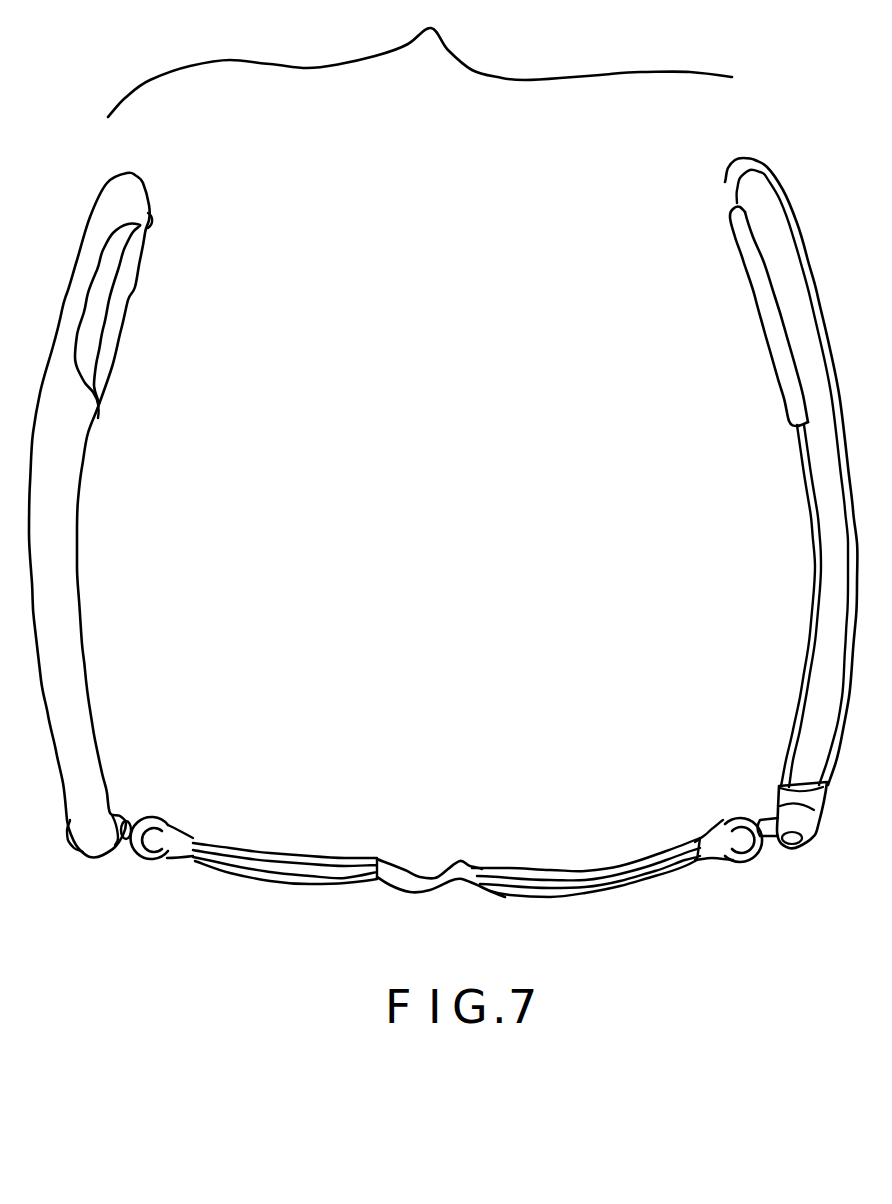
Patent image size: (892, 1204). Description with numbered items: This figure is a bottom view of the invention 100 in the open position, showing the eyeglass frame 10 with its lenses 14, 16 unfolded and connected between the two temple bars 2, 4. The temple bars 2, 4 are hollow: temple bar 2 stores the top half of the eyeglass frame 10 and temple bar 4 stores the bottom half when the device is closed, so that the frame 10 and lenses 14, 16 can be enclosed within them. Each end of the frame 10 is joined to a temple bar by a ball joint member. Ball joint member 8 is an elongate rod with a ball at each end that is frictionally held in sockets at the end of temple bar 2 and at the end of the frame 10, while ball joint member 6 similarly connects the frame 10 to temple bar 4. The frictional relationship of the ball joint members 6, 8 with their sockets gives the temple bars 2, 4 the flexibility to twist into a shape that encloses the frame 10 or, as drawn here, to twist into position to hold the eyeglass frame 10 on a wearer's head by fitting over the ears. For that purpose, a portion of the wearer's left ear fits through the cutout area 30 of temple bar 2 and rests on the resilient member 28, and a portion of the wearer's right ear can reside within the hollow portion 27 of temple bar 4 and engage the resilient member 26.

The invention 100 is at (431, 28).
The temple bar 2 is at (63, 562).
The temple bar 4 is at (812, 547).
The ball joint member 6 is at (762, 813).
The ball joint member 8 is at (125, 820).
The eyeglass frame 10 is at (417, 877).
The lens 14 is at (587, 880).
The lens 16 is at (300, 867).
The resilient member 26 is at (758, 308).
The hollow portion 27 is at (777, 257).
The resilient member 28 is at (127, 317).
The cutout area 30 is at (103, 276).